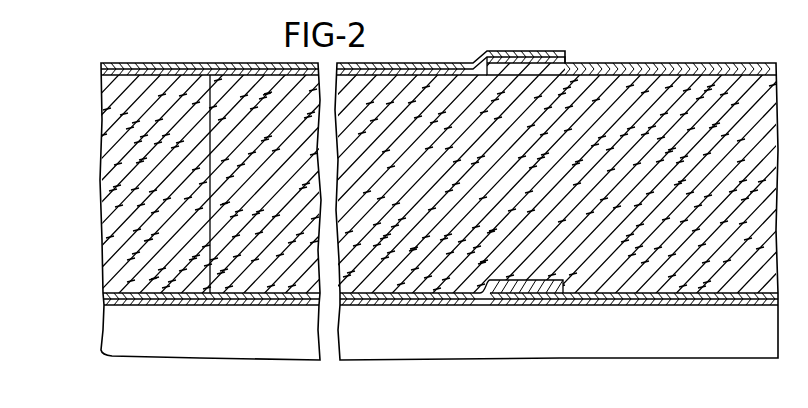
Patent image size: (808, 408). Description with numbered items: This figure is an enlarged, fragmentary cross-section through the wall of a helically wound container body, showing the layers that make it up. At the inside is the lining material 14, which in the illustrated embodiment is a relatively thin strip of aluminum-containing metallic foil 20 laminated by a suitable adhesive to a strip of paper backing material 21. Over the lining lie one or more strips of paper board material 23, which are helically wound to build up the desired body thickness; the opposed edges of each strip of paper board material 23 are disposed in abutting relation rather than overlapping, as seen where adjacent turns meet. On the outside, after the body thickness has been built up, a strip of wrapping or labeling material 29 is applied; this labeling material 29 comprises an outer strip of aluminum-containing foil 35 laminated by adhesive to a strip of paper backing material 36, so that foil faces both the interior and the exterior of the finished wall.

The lining material 14 is at (99, 297).
The aluminum-containing metallic foil 20 is at (399, 306).
The paper backing material 21 is at (358, 306).
The paper board material 23 is at (83, 226).
The wrapping or labeling material 29 is at (100, 69).
The aluminum-containing foil 35 is at (429, 67).
The paper backing material 36 is at (452, 72).